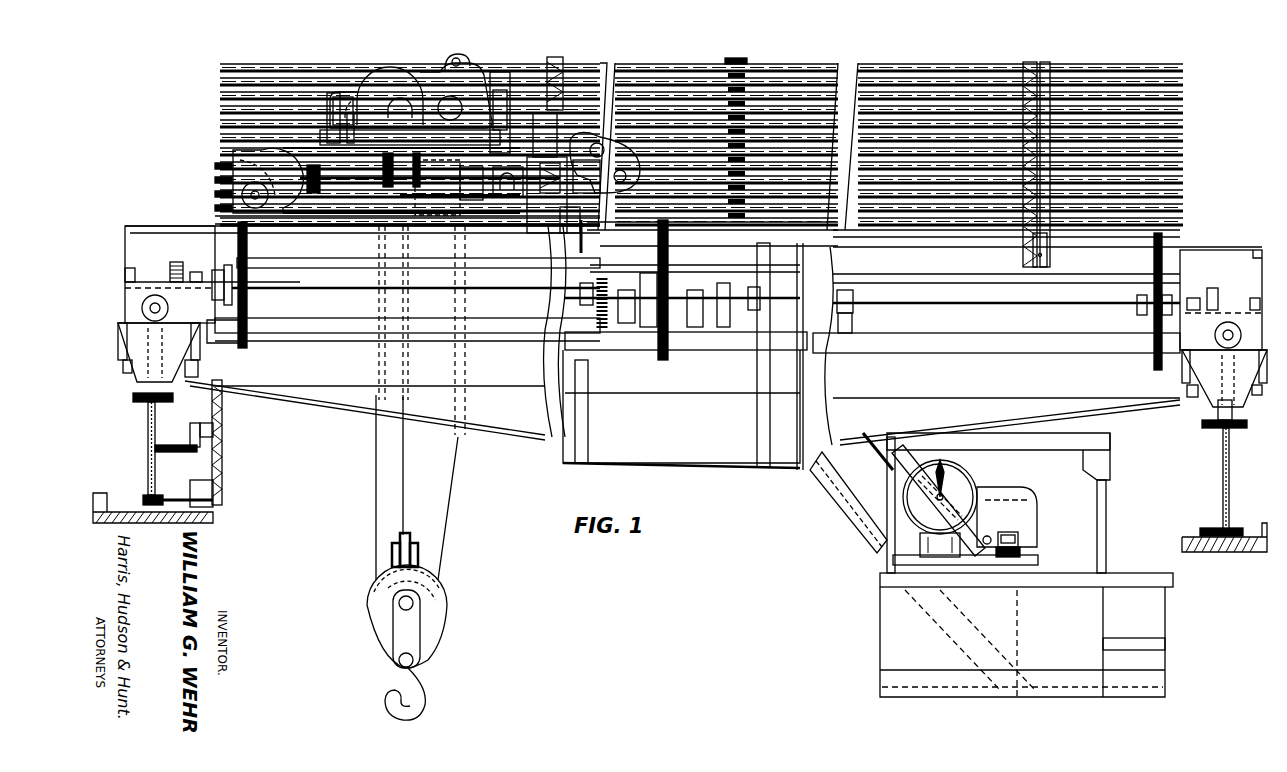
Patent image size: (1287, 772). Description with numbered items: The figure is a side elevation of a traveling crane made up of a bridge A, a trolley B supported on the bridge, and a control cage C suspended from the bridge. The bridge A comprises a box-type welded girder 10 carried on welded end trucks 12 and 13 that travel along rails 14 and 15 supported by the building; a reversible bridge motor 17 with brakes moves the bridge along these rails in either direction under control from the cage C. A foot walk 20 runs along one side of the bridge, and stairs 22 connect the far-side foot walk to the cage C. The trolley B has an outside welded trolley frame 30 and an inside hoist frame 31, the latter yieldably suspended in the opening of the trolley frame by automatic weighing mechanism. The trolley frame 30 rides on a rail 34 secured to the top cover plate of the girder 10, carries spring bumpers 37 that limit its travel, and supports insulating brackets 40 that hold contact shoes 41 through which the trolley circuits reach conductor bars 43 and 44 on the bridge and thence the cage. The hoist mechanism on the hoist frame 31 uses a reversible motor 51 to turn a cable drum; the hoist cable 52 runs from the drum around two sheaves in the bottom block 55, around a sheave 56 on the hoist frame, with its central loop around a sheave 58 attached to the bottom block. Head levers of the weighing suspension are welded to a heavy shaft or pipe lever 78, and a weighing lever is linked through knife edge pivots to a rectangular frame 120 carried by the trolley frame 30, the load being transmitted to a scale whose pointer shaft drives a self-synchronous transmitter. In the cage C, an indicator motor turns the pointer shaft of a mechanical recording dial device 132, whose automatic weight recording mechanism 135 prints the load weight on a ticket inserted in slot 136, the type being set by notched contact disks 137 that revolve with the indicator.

The box-type welded girder 10 is at (650, 462).
The end truck 12 is at (170, 378).
The end truck 13 is at (1202, 405).
The rail 14 is at (137, 395).
The rail 15 is at (1233, 419).
The bridge motor 17 is at (680, 352).
The foot walk 20 is at (362, 318).
The stairs 22 is at (814, 489).
The trolley frame 30 is at (232, 165).
The hoist frame 31 is at (366, 92).
The rail 34 is at (224, 222).
The spring bumper 37 is at (516, 230).
The bracket 40 is at (563, 60).
The contact shoe 41 is at (570, 234).
The conductor bar 43 is at (696, 100).
The conductor bar 44 is at (222, 138).
The reversible electric motor 51 is at (466, 60).
The hoist cable 52 is at (456, 450).
The bottom block 55 is at (433, 603).
The sheave 56 is at (459, 218).
The sheave 58 is at (418, 538).
The shaft or pipe lever 78 is at (395, 215).
The rectangular frame 120 is at (549, 76).
The mechanical recording dial device 132 is at (968, 480).
The automatic weight recording mechanism 135 is at (1030, 508).
The slot 136 is at (1020, 554).
The notched contact disk 137 is at (884, 650).
The bridge A is at (1185, 257).
The trolley B is at (415, 93).
The control cage C is at (971, 565).